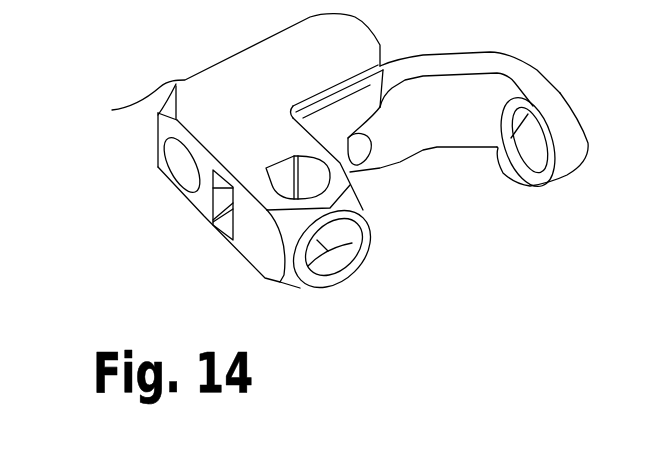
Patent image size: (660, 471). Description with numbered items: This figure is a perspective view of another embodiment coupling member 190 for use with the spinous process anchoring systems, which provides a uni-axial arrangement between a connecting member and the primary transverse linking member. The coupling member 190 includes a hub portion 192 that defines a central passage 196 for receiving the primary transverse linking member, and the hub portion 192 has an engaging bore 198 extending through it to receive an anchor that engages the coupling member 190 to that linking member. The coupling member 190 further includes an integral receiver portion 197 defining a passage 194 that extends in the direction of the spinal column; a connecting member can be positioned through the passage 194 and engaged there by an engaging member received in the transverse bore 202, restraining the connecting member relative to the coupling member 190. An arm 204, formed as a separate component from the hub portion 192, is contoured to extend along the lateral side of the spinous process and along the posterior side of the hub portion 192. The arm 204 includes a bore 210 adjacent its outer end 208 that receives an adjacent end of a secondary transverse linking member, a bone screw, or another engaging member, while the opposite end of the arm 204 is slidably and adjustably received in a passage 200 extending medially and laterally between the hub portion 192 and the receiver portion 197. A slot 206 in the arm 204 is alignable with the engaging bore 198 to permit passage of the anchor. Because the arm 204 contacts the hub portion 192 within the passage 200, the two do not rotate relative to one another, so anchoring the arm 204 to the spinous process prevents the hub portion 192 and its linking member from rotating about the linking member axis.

The coupling member 190 is at (370, 298).
The hub portion 192 is at (221, 71).
The passage 194 is at (214, 221).
The central passage 196 is at (179, 162).
The receiver portion 197 is at (254, 257).
The engaging bore 198 is at (330, 107).
The passage 200 is at (287, 181).
The transverse bore 202 is at (347, 240).
The arm 204 is at (455, 158).
The slot 206 is at (365, 145).
The outer end 208 is at (566, 138).
The bore 210 is at (503, 178).